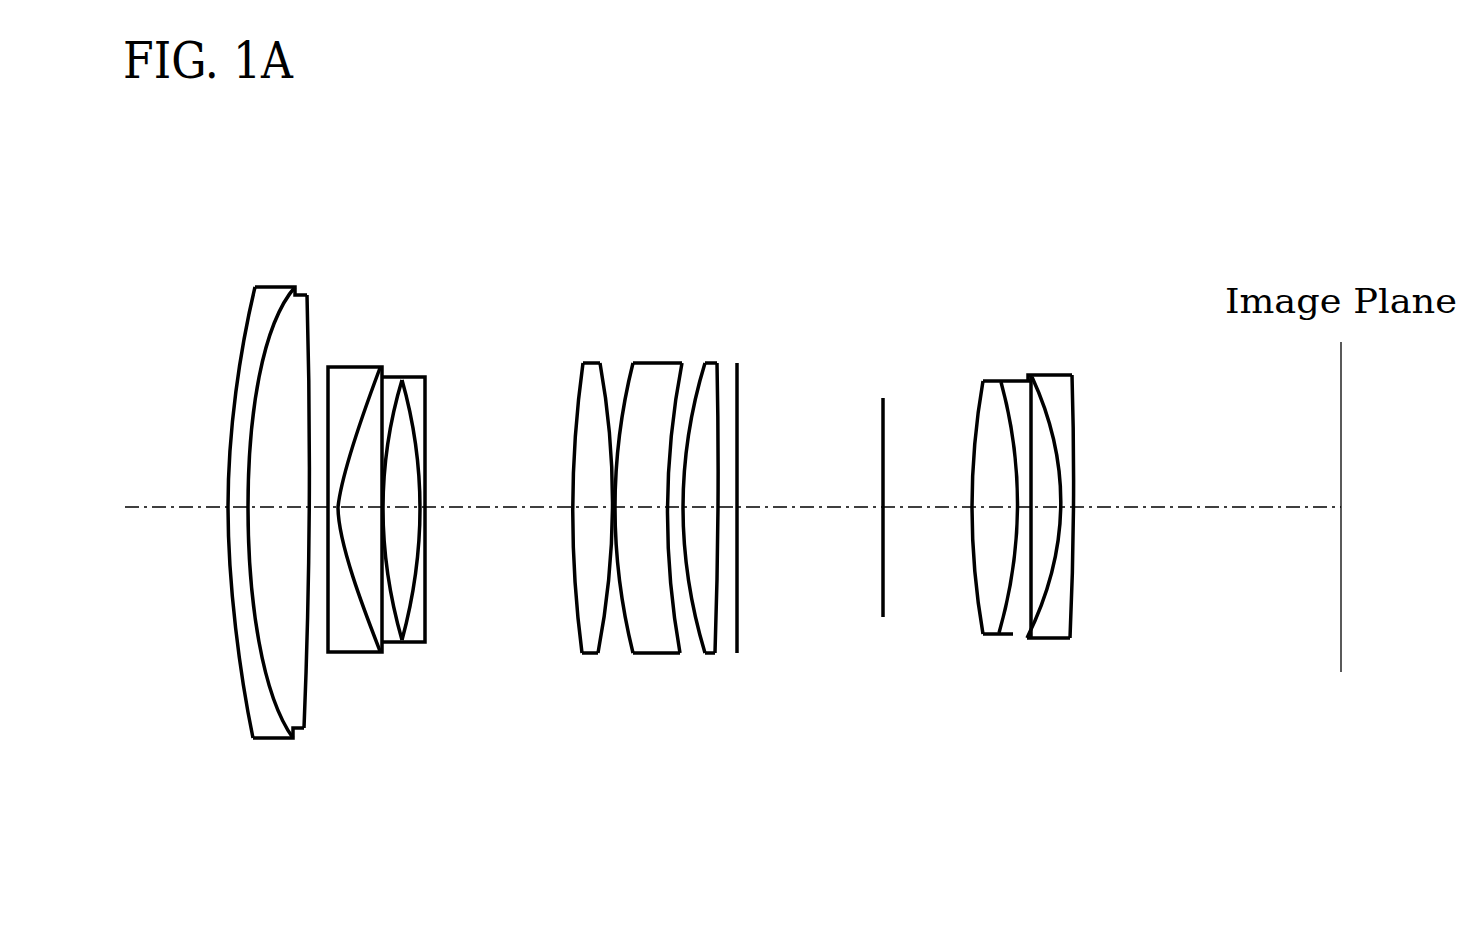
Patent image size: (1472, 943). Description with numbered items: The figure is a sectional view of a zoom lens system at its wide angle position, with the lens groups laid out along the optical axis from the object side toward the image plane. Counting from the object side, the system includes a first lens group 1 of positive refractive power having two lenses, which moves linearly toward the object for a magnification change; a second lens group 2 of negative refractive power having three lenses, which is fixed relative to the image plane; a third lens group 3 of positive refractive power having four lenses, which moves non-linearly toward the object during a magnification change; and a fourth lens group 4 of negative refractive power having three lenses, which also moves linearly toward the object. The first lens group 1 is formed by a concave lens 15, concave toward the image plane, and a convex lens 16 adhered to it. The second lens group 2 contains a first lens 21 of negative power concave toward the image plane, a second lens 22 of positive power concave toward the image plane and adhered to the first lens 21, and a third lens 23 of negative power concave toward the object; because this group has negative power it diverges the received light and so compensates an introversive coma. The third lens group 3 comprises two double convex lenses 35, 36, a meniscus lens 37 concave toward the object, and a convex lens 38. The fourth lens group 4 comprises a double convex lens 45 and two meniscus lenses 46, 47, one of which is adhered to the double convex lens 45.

The first lens group 1 is at (345, 212).
The second lens group 2 is at (492, 244).
The third lens group 3 is at (775, 256).
The fourth lens group 4 is at (1137, 252).
The concave lens 15 is at (242, 376).
The convex lens 16 is at (258, 445).
The first lens 21 is at (344, 358).
The second lens 22 is at (392, 368).
The third lens 23 is at (418, 642).
The double convex lens 35 is at (562, 436).
The double convex lens 36 is at (623, 475).
The meniscus lens 37 is at (672, 418).
The convex lens 38 is at (708, 472).
The double convex lens 45 is at (990, 425).
The meniscus lens 46 is at (1017, 487).
The meniscus lens 47 is at (1063, 447).